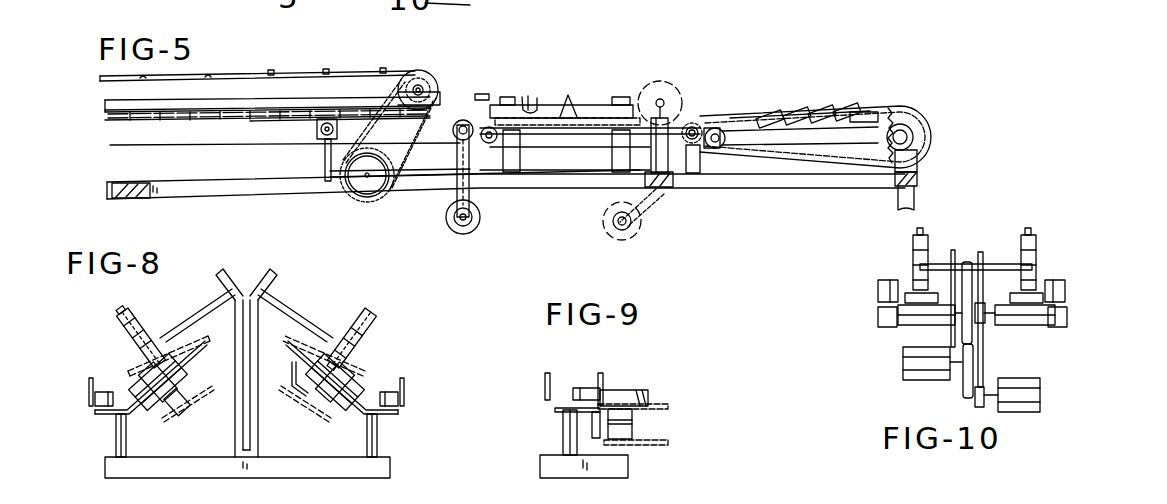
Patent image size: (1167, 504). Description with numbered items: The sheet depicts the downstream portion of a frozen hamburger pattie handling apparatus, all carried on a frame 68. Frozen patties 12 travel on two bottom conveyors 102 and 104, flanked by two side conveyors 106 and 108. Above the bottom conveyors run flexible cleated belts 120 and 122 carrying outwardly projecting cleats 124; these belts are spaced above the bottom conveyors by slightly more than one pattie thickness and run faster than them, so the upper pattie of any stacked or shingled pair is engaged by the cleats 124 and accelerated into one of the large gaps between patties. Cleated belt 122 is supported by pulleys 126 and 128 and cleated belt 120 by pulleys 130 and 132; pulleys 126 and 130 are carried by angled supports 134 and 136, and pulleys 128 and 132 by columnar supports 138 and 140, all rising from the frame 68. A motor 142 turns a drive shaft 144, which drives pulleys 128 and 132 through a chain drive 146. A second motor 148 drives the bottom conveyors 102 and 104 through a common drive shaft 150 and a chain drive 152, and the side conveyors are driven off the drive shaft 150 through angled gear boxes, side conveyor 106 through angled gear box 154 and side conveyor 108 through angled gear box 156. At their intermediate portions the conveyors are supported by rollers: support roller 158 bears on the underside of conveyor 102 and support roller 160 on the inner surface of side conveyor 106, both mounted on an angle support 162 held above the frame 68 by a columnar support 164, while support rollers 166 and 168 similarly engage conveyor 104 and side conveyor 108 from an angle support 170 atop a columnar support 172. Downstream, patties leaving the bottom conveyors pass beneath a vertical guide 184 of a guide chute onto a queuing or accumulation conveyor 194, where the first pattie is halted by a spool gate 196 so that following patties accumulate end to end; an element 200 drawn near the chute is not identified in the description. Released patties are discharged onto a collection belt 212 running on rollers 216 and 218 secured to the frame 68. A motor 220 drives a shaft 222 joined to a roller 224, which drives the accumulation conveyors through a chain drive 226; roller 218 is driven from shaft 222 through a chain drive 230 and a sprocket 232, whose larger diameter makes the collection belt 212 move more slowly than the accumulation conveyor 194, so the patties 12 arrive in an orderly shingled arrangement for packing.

In FIG. 5, the frozen pattie 12 is at (185, 120).
In FIG. 8, the frozen pattie 12 is at (135, 369).
In FIG. 9, the frozen pattie 12 is at (618, 390).
In FIG. 5, the frame 68 is at (208, 199).
In FIG. 8, the frame 68 is at (390, 468).
In FIG. 9, the frame 68 is at (629, 470).
In FIG. 5, the bottom conveyor 102 is at (302, 122).
In FIG. 8, the bottom conveyor 102 is at (346, 363).
In FIG. 10, the bottom conveyor 102 is at (1050, 324).
In FIG. 8, the bottom conveyor 104 is at (208, 344).
In FIG. 9, the bottom conveyor 104 is at (668, 407).
In FIG. 10, the bottom conveyor 104 is at (905, 322).
In FIG. 5, the side conveyor 106 is at (236, 99).
In FIG. 8, the side conveyor 106 is at (374, 384).
In FIG. 10, the side conveyor 106 is at (1065, 292).
In FIG. 8, the side conveyor 108 is at (92, 397).
In FIG. 9, the side conveyor 108 is at (600, 374).
In FIG. 10, the side conveyor 108 is at (878, 289).
In FIG. 5, the cleated belt 120 is at (348, 108).
In FIG. 8, the cleated belt 120 is at (370, 312).
In FIG. 10, the cleated belt 120 is at (1038, 250).
In FIG. 8, the cleated belt 122 is at (119, 318).
In FIG. 10, the cleated belt 122 is at (912, 250).
In FIG. 5, the cleats 124 is at (326, 69).
In FIG. 8, the cleats 124 is at (124, 311).
In FIG. 10, the cleats 124 is at (918, 232).
In FIG. 8, the pulley 126 is at (140, 318).
In FIG. 10, the pulley 128 is at (910, 255).
In FIG. 8, the pulley 130 is at (341, 328).
In FIG. 5, the pulley 132 is at (424, 78).
In FIG. 10, the pulley 132 is at (1040, 258).
In FIG. 8, the angled support 134 is at (235, 275).
In FIG. 8, the angled support 136 is at (256, 276).
In FIG. 10, the columnar support 138 is at (952, 250).
In FIG. 10, the columnar support 140 is at (967, 260).
In FIG. 5, the motor 142 is at (367, 195).
In FIG. 10, the motor 142 is at (903, 365).
In FIG. 5, the drive shaft 144 is at (417, 84).
In FIG. 10, the drive shaft 144 is at (983, 261).
In FIG. 5, the chain drive 146 is at (404, 150).
In FIG. 10, the chain drive 146 is at (962, 381).
In FIG. 5, the motor 148 is at (466, 233).
In FIG. 10, the motor 148 is at (1040, 392).
In FIG. 5, the common drive shaft 150 is at (465, 121).
In FIG. 10, the common drive shaft 150 is at (998, 325).
In FIG. 5, the chain drive 152 is at (473, 190).
In FIG. 10, the chain drive 152 is at (984, 366).
In FIG. 10, the angled gear box 154 is at (1067, 318).
In FIG. 10, the angled gear box 156 is at (878, 318).
In FIG. 8, the support roller 158 is at (286, 369).
In FIG. 8, the support roller 160 is at (399, 393).
In FIG. 8, the angle support 162 is at (355, 414).
In FIG. 8, the columnar support 164 is at (377, 437).
In FIG. 8, the support roller 166 is at (181, 406).
In FIG. 8, the support roller 168 is at (95, 402).
In FIG. 8, the angle support 170 is at (144, 419).
In FIG. 8, the columnar support 172 is at (115, 438).
In FIG. 5, the vertical guide 184 is at (592, 105).
In FIG. 5, the queuing or accumulation conveyor 194 is at (567, 150).
In FIG. 5, the spool gate 196 is at (650, 80).
In FIG. 5, the fitting 200 is at (536, 99).
In FIG. 5, the collection belt 212 is at (861, 110).
In FIG. 5, the roller 216 is at (744, 168).
In FIG. 5, the roller 218 is at (914, 134).
In FIG. 5, the motor 220 is at (638, 224).
In FIG. 5, the shaft 222 is at (690, 124).
In FIG. 5, the roller 224 is at (715, 127).
In FIG. 5, the chain drive 226 is at (660, 198).
In FIG. 5, the chain drive 230 is at (753, 115).
In FIG. 5, the sprocket 232 is at (903, 104).